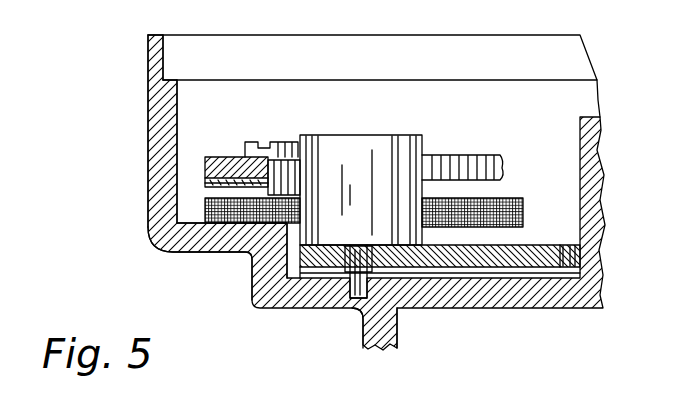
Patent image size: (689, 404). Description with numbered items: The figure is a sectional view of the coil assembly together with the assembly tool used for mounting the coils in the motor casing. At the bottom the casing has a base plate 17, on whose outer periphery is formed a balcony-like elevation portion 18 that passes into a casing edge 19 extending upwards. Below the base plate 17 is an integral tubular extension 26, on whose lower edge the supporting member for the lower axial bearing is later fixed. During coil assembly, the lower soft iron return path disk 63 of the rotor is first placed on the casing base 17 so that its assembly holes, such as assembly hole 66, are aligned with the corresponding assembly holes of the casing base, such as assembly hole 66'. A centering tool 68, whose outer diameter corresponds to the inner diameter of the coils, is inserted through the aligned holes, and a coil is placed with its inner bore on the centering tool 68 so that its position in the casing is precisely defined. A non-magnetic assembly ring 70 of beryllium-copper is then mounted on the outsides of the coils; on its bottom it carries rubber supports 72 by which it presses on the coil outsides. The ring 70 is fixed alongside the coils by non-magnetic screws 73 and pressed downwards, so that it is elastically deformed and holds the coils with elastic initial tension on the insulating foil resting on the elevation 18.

The base plate 17 is at (470, 297).
The balcony-like elevation portion 18 is at (232, 258).
The casing edge 19 is at (148, 157).
The tubular extension 26 is at (364, 335).
The soft iron return path disk 63 is at (525, 245).
The assembly hole 66 is at (304, 297).
The assembly hole of the casing base 66' is at (335, 303).
The centering tool 68 is at (413, 130).
The non-magnetic assembly ring 70 is at (216, 157).
The rubber support 72 is at (205, 183).
The non-magnetic screw 73 is at (252, 140).